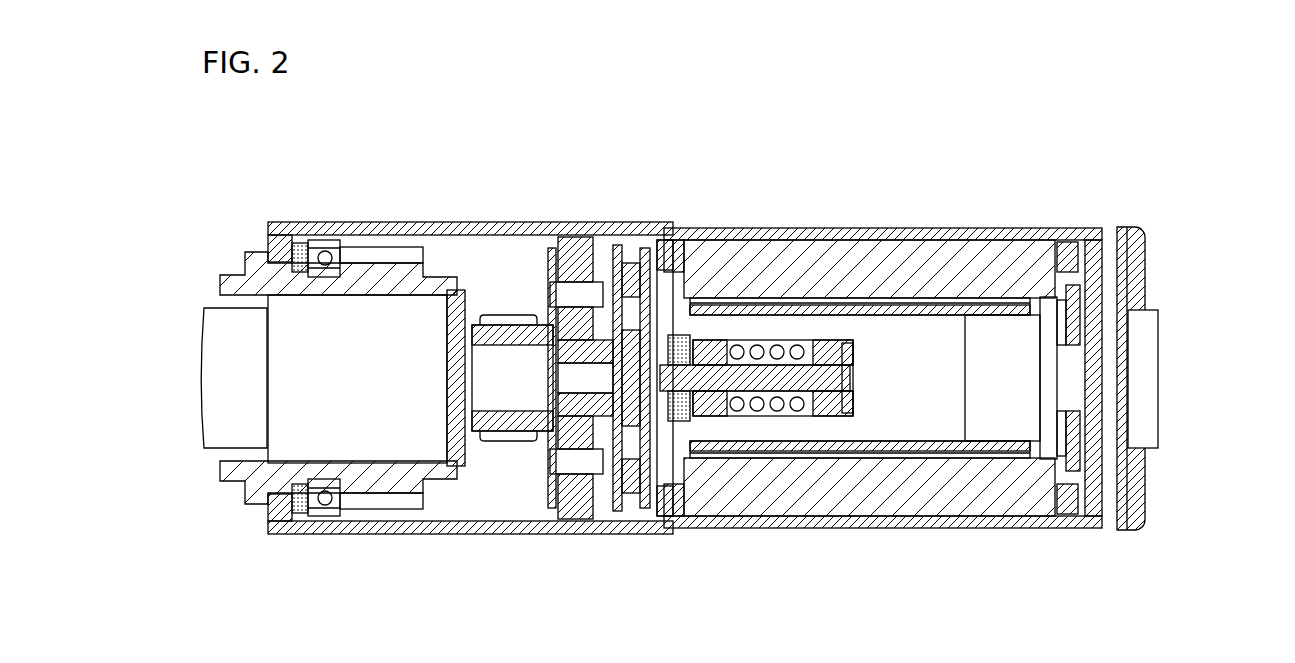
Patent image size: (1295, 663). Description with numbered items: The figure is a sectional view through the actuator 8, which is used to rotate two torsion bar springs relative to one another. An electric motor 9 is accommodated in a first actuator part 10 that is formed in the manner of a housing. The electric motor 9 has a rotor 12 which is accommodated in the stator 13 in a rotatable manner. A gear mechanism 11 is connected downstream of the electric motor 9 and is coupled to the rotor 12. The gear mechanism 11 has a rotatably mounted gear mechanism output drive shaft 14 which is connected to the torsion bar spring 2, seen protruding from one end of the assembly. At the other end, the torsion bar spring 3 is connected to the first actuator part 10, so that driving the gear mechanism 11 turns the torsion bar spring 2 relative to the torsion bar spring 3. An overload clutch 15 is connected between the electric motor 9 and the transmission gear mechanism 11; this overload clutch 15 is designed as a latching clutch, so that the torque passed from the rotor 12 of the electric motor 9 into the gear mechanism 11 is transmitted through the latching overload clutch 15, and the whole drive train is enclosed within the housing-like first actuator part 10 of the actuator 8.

The torsion bar spring 2 is at (200, 397).
The torsion bar spring 3 is at (1152, 380).
The actuator 8 is at (1168, 219).
The electric motor 9 is at (793, 533).
The first actuator part 10 is at (865, 531).
The gear mechanism 11 is at (557, 556).
The rotor 12 is at (943, 318).
The stator 13 is at (925, 262).
The gear mechanism output drive shaft 14 is at (390, 486).
The overload clutch 15 is at (793, 293).